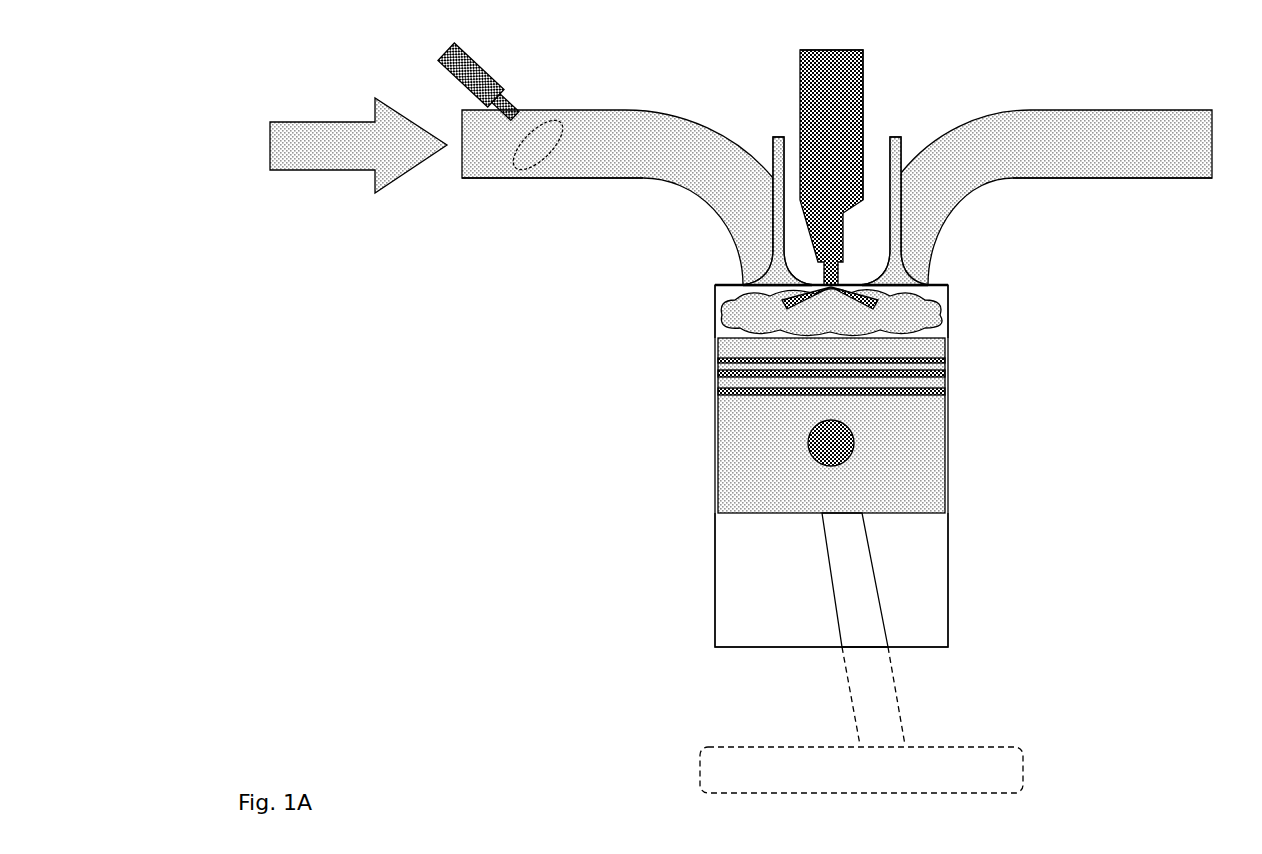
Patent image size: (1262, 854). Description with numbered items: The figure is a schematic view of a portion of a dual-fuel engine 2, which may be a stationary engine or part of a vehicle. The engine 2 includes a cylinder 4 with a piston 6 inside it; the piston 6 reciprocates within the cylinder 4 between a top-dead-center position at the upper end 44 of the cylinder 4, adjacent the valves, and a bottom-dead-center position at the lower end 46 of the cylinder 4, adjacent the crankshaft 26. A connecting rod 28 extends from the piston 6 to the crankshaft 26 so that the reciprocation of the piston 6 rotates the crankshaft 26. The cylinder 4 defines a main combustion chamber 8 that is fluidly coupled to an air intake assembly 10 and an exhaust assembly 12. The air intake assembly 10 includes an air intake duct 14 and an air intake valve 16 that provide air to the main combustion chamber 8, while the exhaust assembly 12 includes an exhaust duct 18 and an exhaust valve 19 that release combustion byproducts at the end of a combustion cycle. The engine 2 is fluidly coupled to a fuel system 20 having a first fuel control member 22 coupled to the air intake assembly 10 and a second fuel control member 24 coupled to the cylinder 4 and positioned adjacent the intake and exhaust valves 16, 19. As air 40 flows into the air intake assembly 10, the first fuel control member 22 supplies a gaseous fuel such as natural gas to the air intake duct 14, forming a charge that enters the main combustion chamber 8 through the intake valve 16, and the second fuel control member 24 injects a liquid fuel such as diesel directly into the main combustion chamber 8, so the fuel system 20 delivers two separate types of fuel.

The engine 2 is at (724, 85).
The cylinder 4 is at (948, 587).
The piston 6 is at (930, 430).
The main combustion chamber 8 is at (933, 325).
The air intake assembly 10 is at (618, 100).
The exhaust assembly 12 is at (1122, 95).
The air intake duct 14 is at (617, 178).
The air intake valve 16 is at (718, 290).
The exhaust duct 18 is at (1060, 160).
The exhaust valve 19 is at (930, 280).
The fuel system 20 is at (905, 70).
The first fuel control member 22 is at (484, 65).
The second fuel control member 24 is at (862, 110).
The crankshaft 26 is at (988, 778).
The connecting rod 28 is at (883, 695).
The air 40 is at (295, 167).
The upper end 44 is at (702, 279).
The lower end 46 is at (698, 632).